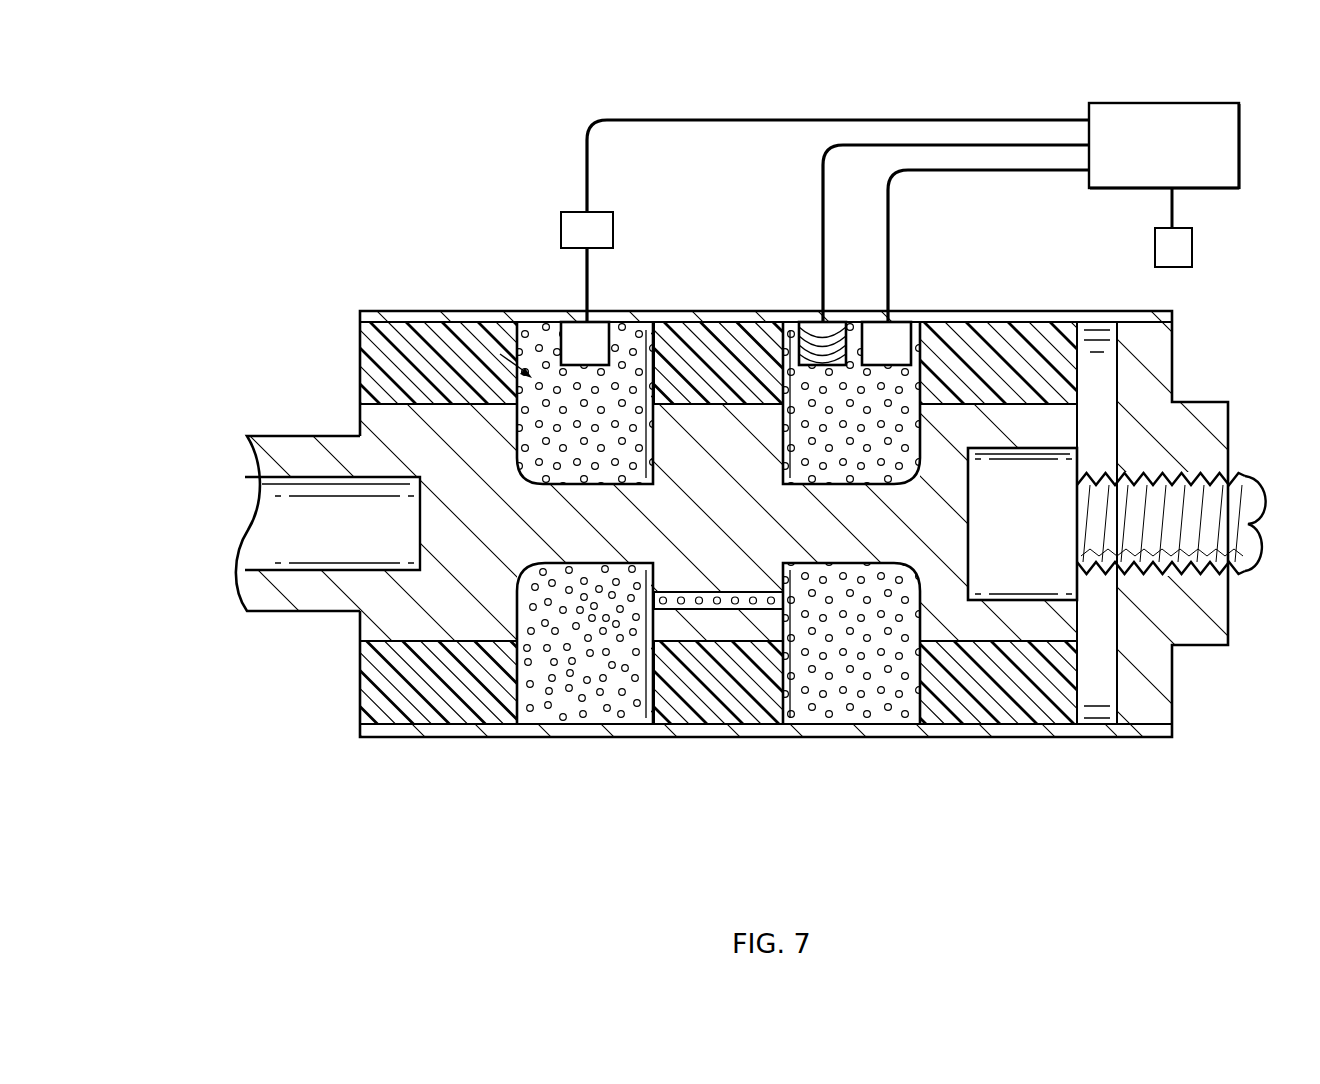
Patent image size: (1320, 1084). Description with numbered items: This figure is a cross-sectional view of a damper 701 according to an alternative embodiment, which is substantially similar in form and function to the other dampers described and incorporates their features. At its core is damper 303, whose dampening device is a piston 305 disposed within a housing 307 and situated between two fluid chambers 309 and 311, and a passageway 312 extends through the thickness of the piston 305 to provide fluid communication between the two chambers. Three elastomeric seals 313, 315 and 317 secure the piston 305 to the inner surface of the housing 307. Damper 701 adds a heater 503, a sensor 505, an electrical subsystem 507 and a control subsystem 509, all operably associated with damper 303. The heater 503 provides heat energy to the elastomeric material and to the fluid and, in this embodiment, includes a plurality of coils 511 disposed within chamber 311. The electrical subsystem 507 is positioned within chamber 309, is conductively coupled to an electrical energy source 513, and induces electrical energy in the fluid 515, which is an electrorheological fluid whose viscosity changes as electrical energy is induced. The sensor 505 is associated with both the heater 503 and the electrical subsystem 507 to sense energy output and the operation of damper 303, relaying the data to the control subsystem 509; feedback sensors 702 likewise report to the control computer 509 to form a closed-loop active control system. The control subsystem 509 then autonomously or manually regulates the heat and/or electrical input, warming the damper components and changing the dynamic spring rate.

The damper 303 is at (1055, 849).
The piston 305 is at (360, 612).
The housing 307 is at (1177, 703).
The fluid chamber 309 is at (568, 725).
The fluid chamber 311 is at (867, 725).
The passageway 312 is at (717, 610).
The elastomeric seal 313 is at (425, 725).
The elastomeric seal 315 is at (743, 737).
The elastomeric seal 317 is at (1027, 725).
The heater 503 is at (783, 250).
The sensor 505 is at (922, 322).
The electrical subsystem 507 is at (545, 311).
The control subsystem 509 is at (1130, 103).
The coils 511 is at (781, 322).
The electrical energy source 513 is at (560, 230).
The fluid 515 is at (455, 322).
The damper 701 is at (200, 122).
The feedback sensors 702 is at (1192, 250).